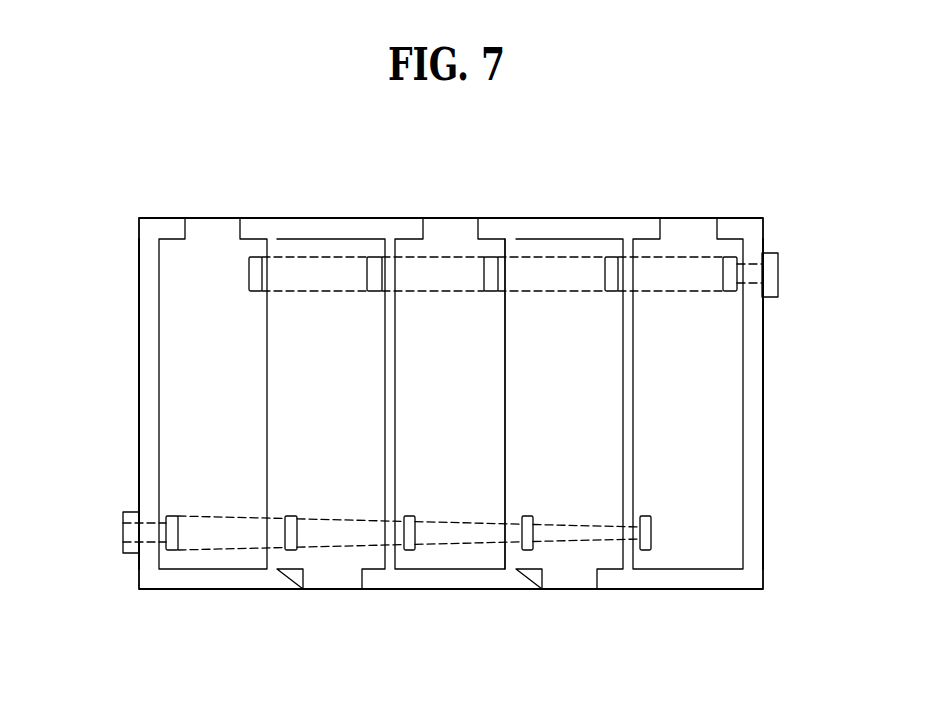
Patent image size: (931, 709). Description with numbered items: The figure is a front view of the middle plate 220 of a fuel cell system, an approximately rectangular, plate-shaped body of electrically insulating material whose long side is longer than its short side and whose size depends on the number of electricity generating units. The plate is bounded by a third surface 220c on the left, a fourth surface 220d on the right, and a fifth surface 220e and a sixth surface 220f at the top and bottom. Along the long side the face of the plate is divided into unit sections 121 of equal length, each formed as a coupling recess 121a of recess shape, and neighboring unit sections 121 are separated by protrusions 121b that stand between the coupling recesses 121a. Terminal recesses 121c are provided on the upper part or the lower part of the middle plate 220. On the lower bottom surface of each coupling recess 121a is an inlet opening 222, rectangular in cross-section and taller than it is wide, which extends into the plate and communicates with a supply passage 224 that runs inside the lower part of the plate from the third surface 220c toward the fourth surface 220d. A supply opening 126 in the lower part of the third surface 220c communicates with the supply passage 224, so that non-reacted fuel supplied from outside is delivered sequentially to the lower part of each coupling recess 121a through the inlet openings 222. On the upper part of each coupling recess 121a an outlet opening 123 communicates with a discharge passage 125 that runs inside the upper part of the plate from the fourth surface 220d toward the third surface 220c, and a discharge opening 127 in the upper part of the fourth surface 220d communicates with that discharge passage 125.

The middle plate 220 is at (99, 140).
The third surface 220c is at (139, 403).
The fourth surface 220d is at (763, 543).
The fifth surface 220e is at (587, 218).
The sixth surface 220f is at (737, 590).
The unit section 121 is at (455, 467).
The coupling recess 121a is at (502, 487).
The protrusion 121b is at (632, 470).
The terminal recess 121c is at (241, 226).
The outlet opening 123 is at (491, 254).
The discharge passage 125 is at (709, 253).
The supply opening 126 is at (123, 530).
The discharge opening 127 is at (778, 272).
The inlet opening 222 is at (531, 549).
The supply passage 224 is at (218, 548).